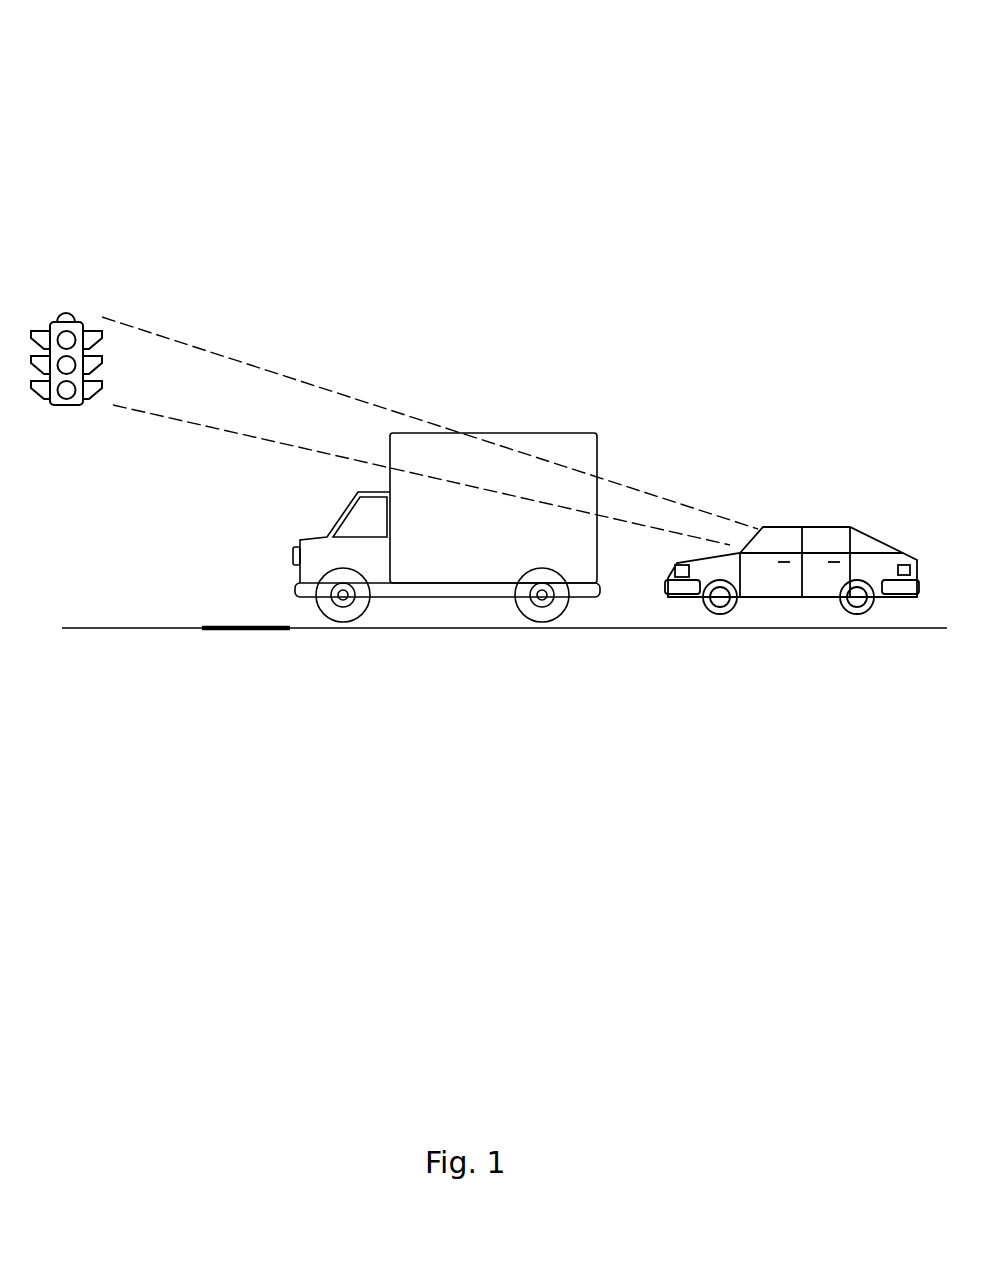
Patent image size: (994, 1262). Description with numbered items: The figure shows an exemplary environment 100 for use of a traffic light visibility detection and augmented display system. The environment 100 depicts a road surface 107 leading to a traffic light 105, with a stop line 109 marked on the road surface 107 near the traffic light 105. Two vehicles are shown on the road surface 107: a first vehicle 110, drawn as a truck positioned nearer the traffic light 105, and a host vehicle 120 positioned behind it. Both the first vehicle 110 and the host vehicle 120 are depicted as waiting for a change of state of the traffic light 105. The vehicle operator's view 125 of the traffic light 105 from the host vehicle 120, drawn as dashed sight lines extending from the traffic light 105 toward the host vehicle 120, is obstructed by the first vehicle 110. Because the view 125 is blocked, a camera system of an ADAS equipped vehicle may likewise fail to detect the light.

The exemplary environment 100 is at (500, 31).
The traffic light 105 is at (62, 298).
The road surface 107 is at (115, 632).
The stop line 109 is at (245, 632).
The first vehicle 110 is at (458, 597).
The host vehicle 120 is at (837, 623).
The vehicle operator's view 125 is at (678, 493).